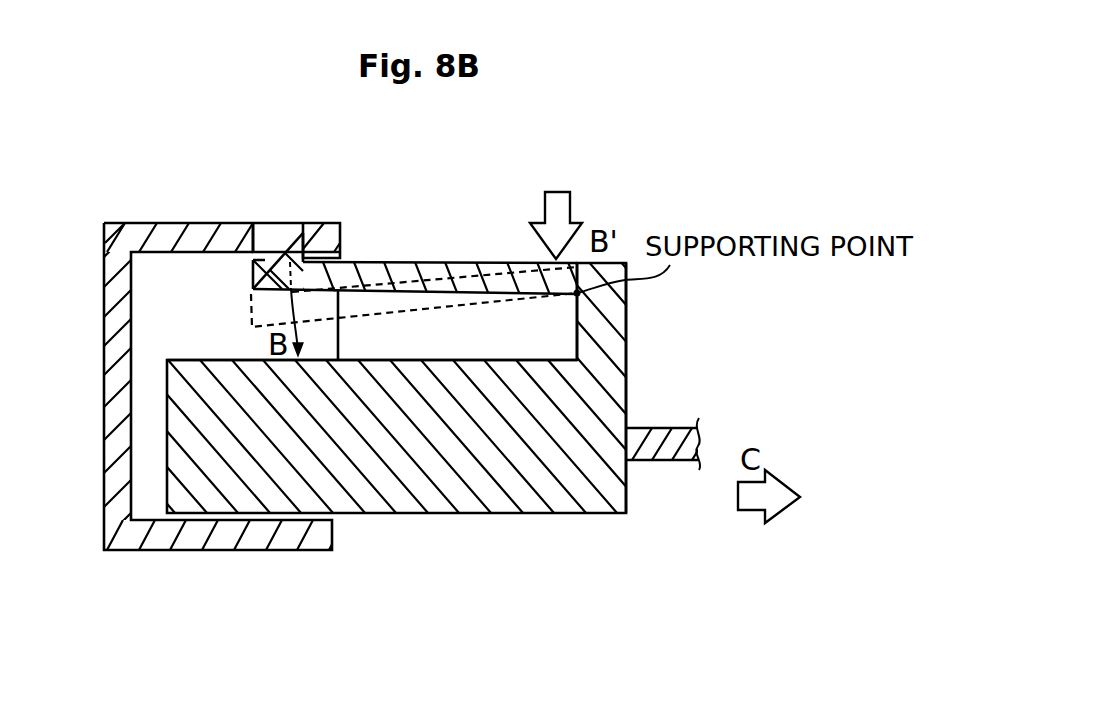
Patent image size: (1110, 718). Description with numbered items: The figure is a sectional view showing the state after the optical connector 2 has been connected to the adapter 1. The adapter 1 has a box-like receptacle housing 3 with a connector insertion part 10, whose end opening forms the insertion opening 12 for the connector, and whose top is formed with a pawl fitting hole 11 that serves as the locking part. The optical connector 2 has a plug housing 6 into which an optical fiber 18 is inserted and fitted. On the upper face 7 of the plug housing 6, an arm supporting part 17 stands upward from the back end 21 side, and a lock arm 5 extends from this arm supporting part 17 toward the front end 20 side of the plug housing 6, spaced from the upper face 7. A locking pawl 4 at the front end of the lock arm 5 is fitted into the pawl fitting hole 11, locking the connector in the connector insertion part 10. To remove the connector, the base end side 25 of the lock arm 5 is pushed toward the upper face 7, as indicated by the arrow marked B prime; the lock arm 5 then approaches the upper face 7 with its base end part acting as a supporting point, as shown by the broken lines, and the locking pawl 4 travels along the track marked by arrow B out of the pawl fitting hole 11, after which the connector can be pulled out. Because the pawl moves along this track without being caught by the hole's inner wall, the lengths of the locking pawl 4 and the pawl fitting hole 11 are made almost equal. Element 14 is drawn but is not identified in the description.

The adapter 1 is at (190, 573).
The optical connector 2 is at (506, 544).
The receptacle housing 3 is at (240, 540).
The locking pawl 4 is at (279, 250).
The lock arm 5 is at (357, 267).
The plug housing 6 is at (568, 503).
The upper face 7 is at (480, 360).
The connector insertion part 10 is at (172, 292).
The pawl fitting hole 11 is at (288, 232).
The insertion opening 12 is at (338, 337).
The engaging piece 14 is at (275, 250).
The arm supporting part 17 is at (632, 317).
The optical fiber 18 is at (672, 428).
The front end 20 is at (165, 432).
The back end 21 is at (628, 385).
The base end side 25 is at (567, 256).